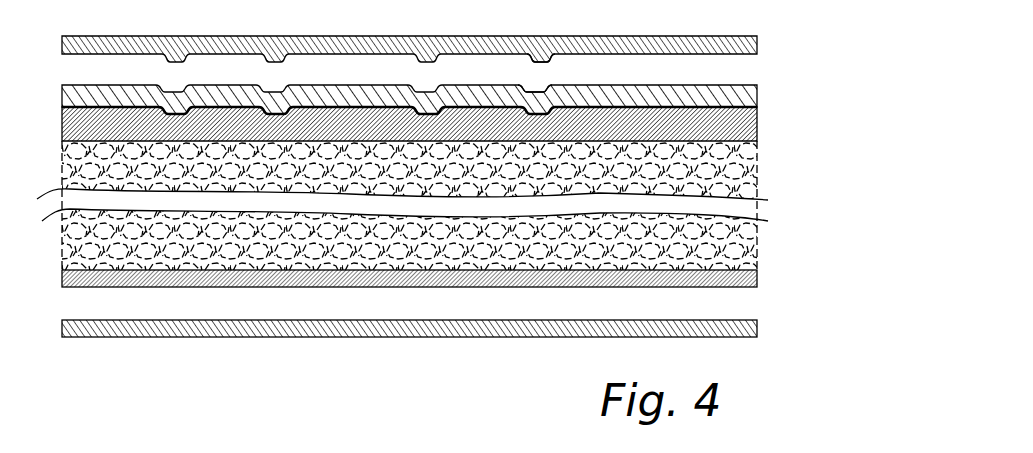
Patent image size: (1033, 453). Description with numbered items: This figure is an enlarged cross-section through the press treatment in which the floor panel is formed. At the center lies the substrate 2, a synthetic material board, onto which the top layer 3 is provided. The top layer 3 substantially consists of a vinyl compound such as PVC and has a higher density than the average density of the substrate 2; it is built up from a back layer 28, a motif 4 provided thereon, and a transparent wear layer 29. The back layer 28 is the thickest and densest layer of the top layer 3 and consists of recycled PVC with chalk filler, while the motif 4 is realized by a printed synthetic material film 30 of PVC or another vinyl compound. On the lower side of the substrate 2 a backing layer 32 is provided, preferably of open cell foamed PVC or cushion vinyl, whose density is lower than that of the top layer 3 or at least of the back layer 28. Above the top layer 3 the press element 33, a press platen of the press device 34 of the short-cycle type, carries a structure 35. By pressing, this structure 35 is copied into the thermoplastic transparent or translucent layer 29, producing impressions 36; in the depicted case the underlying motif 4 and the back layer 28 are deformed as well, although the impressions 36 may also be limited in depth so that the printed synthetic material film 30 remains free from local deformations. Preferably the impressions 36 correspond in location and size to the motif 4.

The substrate 2 is at (713, 268).
The top layer 3 is at (60, 83).
The motif 4 is at (431, 103).
The back layer 28 is at (760, 110).
The transparent wear layer 29 is at (760, 107).
The printed synthetic material film 30 is at (759, 110).
The backing layer 32 is at (632, 284).
The press element 33 is at (128, 50).
The press device 34 is at (414, 45).
The structure 35 is at (542, 59).
The impressions 36 is at (534, 90).